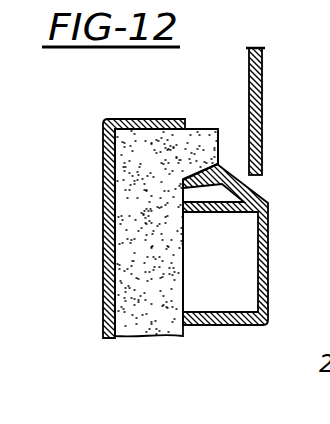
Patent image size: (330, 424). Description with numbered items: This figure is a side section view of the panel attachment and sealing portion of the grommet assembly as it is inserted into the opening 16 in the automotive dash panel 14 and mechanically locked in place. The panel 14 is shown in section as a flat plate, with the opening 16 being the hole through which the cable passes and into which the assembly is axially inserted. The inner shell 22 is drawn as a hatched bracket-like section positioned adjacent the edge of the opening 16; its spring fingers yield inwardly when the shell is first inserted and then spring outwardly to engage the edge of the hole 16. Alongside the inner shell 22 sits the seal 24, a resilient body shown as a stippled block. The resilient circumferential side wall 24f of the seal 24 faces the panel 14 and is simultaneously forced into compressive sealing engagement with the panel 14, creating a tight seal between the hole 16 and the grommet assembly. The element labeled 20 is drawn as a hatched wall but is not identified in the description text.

The automotive dash panel 14 is at (263, 98).
The opening 16 is at (256, 179).
The wall 20 is at (102, 201).
The inner shell 22 is at (268, 293).
The seal 24 is at (153, 323).
The resilient circumferential side wall 24f is at (215, 146).